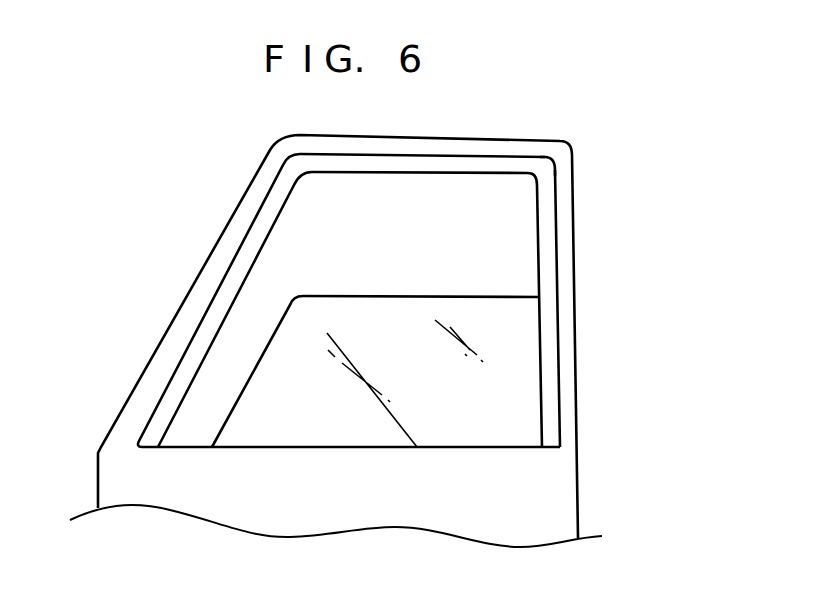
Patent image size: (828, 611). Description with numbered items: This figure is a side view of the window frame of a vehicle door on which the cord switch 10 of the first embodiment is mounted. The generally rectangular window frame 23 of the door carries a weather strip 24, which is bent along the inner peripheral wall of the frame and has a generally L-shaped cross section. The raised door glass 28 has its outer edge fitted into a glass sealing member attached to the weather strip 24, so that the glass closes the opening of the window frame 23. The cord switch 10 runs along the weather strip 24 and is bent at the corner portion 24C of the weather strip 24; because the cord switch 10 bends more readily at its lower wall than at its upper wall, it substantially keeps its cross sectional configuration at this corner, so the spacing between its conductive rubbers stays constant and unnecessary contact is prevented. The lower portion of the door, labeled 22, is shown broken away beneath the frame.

The cord switch 10 is at (537, 245).
The door panel 22 is at (575, 510).
The window frame 23 is at (572, 229).
The weather strip 24 is at (555, 348).
The corner portion of the weather strip 24C is at (548, 162).
The door glass 28 is at (319, 310).